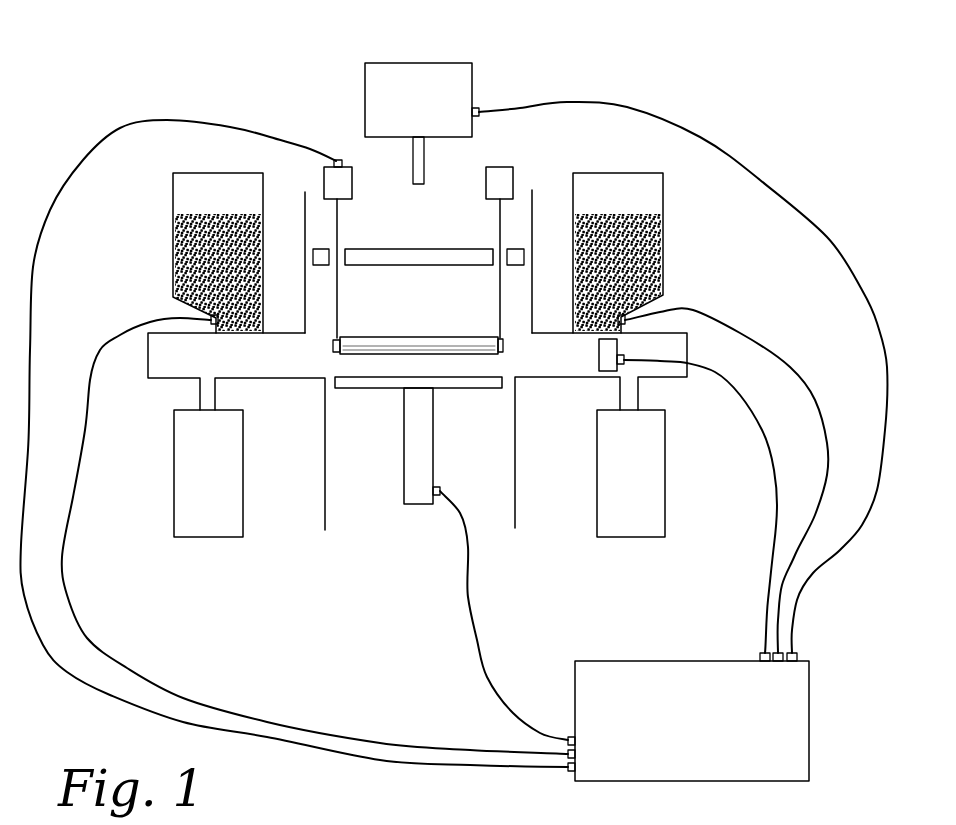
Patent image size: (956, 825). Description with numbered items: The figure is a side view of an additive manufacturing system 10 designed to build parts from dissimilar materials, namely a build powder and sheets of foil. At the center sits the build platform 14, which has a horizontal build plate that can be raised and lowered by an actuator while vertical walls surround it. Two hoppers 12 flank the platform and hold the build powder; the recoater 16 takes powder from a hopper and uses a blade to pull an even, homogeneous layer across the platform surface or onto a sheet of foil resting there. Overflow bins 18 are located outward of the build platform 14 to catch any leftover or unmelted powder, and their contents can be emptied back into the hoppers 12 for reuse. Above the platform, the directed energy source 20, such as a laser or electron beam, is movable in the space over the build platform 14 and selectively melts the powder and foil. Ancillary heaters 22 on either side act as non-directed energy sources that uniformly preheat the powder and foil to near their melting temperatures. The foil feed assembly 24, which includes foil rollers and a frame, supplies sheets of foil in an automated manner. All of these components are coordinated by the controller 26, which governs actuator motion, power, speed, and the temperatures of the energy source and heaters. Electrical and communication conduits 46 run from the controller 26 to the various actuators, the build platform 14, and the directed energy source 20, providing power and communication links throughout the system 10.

The additive manufacturing system 10 is at (118, 34).
The hoppers 12 is at (173, 204).
The build platform 14 is at (352, 388).
The recoater 16 is at (599, 362).
The overflow bins 18 is at (172, 497).
The directed energy source 20 is at (365, 83).
The ancillary heaters 22 is at (397, 248).
The foil feed assembly 24 is at (413, 337).
The controller 26 is at (812, 733).
The electrical and/or communication conduits 46 is at (67, 668).